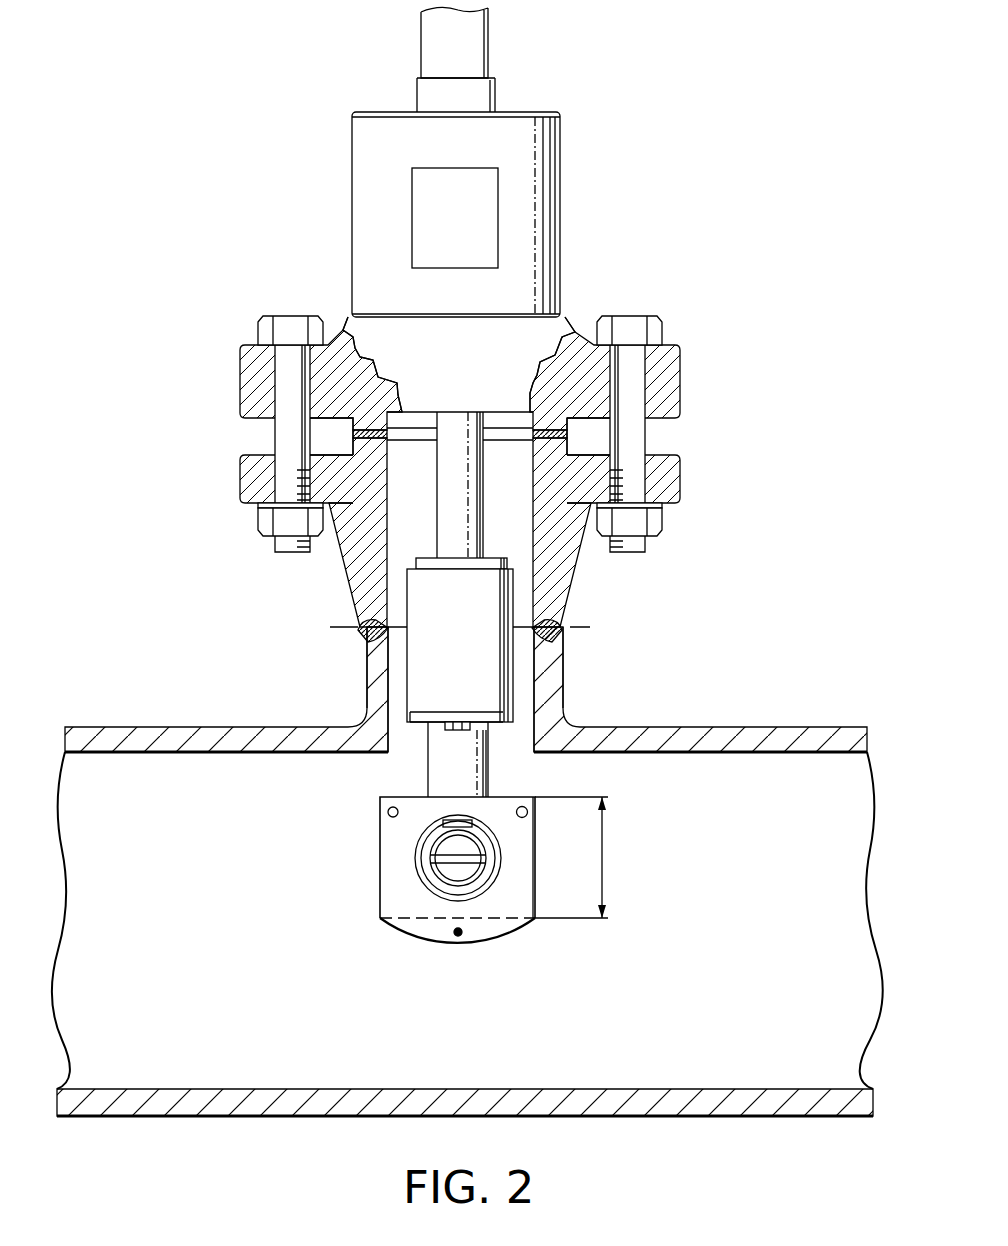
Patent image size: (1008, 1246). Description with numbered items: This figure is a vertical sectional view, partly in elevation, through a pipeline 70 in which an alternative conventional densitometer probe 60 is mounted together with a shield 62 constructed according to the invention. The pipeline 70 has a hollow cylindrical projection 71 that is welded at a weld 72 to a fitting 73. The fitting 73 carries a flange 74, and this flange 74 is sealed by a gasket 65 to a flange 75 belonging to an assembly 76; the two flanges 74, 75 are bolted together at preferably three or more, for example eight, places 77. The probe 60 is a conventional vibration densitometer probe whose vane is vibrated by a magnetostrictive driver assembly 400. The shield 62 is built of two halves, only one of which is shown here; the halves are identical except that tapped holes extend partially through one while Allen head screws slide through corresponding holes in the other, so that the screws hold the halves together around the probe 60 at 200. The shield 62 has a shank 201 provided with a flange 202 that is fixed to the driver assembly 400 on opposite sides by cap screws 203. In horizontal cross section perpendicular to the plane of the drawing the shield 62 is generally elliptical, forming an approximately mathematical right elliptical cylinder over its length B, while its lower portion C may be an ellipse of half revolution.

The densitometer probe 60 is at (510, 543).
The shield 62 is at (366, 893).
The gasket 65 is at (353, 431).
The pipeline 70 is at (340, 706).
The hollow cylindrical projection 71 is at (367, 663).
The weld 72 is at (358, 628).
The fitting 73 is at (598, 560).
The flange 74 is at (684, 470).
The flange 75 is at (684, 353).
The assembly 76 is at (572, 212).
The bolting places 77 is at (283, 318).
The screw locations 200 is at (388, 812).
The shank 201 is at (500, 767).
The flange 202 is at (423, 715).
The cap screws 203 is at (450, 731).
The magnetostrictive driver assembly 400 is at (508, 672).
The length B is at (572, 857).
The portion C is at (458, 932).